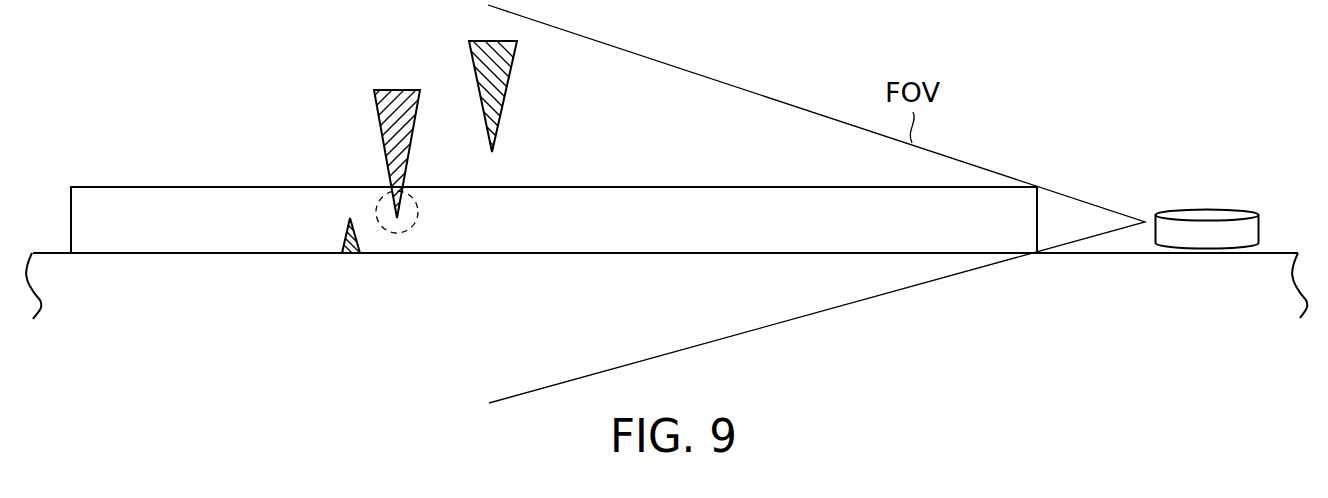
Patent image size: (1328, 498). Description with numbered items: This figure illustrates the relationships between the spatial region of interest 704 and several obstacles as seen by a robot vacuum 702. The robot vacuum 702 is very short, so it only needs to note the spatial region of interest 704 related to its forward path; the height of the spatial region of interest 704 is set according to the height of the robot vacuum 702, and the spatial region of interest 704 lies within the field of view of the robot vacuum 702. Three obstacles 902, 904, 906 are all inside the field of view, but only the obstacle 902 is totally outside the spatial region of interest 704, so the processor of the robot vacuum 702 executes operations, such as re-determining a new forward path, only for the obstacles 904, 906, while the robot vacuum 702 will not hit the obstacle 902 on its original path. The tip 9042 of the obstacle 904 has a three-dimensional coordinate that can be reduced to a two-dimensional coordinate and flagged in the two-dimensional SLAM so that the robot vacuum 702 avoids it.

The spatial region of interest 704 is at (184, 186).
The obstacle 904 is at (376, 140).
The obstacle 902 is at (507, 97).
The obstacle 906 is at (342, 230).
The tip 9042 is at (414, 222).
The robot vacuum 702 is at (1205, 212).